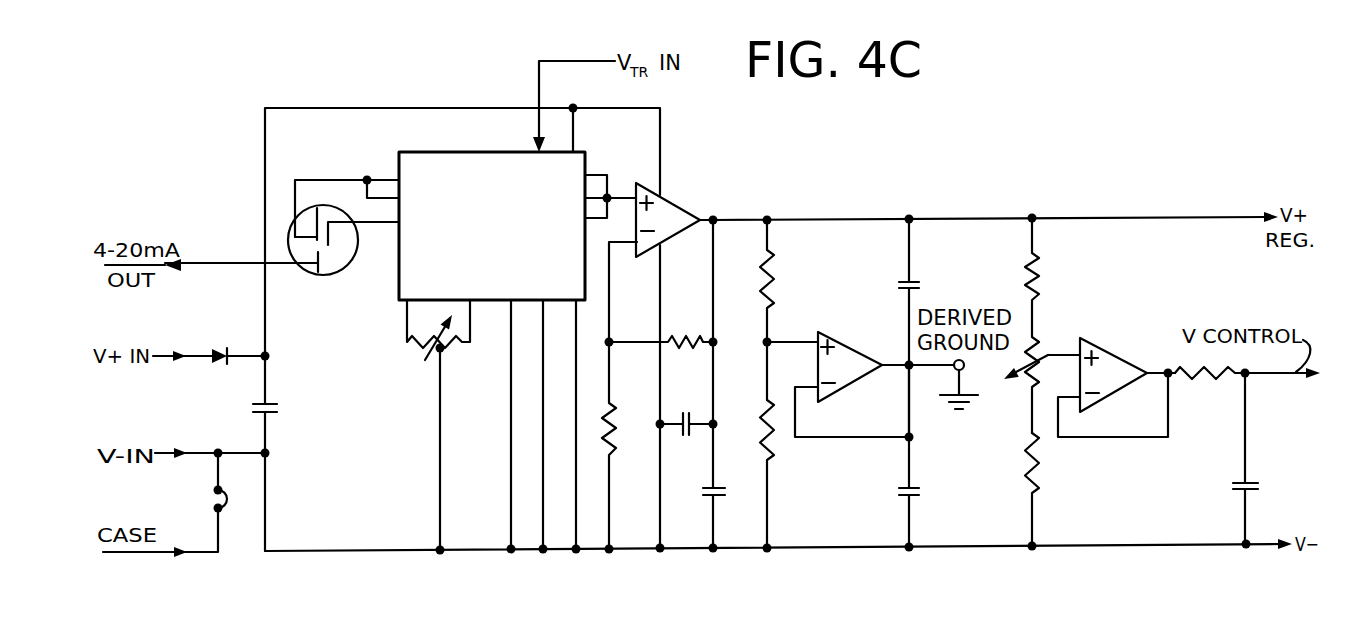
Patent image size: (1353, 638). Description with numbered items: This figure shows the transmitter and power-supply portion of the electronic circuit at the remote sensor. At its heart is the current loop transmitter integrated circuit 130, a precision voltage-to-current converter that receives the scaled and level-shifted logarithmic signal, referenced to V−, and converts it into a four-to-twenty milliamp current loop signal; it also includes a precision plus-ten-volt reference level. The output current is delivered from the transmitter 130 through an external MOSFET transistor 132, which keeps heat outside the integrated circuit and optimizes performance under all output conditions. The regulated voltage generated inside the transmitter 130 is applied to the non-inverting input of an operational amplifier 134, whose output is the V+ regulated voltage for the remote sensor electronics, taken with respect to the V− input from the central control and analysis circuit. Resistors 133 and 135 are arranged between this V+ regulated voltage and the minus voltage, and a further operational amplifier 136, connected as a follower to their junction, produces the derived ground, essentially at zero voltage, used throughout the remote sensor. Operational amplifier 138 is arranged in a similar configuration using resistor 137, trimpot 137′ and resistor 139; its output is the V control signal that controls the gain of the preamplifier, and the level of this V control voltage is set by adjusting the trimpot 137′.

The current loop transmitter integrated circuit 130 is at (501, 236).
The MOSFET transistor 132 is at (331, 275).
The resistor 133 is at (770, 291).
The operational amplifier 134 is at (668, 198).
The resistor 135 is at (771, 445).
The operational amplifier 136 is at (836, 334).
The resistor 137 is at (1062, 325).
The trimpot 137' is at (1002, 398).
The operational amplifier 138 is at (1113, 352).
The resistor 139 is at (1042, 475).